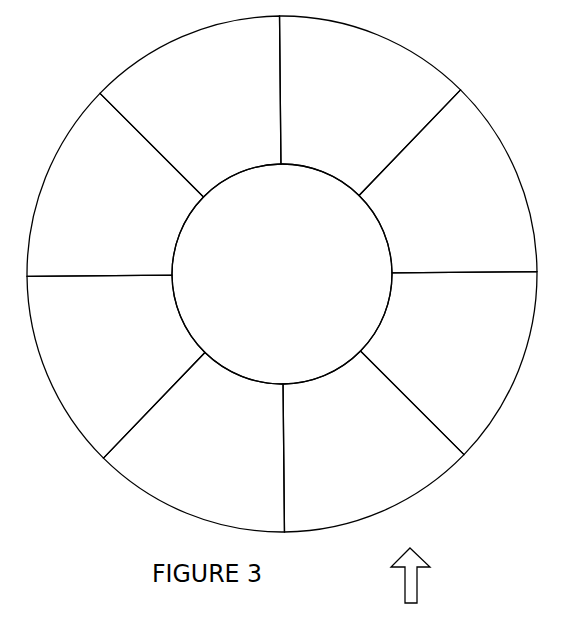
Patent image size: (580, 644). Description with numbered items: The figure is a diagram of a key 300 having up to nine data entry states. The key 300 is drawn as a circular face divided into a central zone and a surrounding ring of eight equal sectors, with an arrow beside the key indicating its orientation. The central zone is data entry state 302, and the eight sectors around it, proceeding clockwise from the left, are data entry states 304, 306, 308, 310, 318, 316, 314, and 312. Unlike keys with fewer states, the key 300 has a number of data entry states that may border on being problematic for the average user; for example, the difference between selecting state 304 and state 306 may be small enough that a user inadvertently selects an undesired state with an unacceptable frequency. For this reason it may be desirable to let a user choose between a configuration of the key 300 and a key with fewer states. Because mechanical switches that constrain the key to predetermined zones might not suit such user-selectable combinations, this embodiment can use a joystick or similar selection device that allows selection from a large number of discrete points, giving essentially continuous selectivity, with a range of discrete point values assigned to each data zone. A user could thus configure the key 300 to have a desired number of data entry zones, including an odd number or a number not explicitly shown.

The key 300 is at (385, 575).
The data entry state 302 is at (282, 274).
The data entry state 304 is at (114, 184).
The data entry state 306 is at (190, 107).
The data entry state 308 is at (371, 105).
The data entry state 310 is at (447, 181).
The data entry state 312 is at (116, 367).
The data entry state 314 is at (193, 443).
The data entry state 316 is at (374, 441).
The data entry state 318 is at (449, 364).